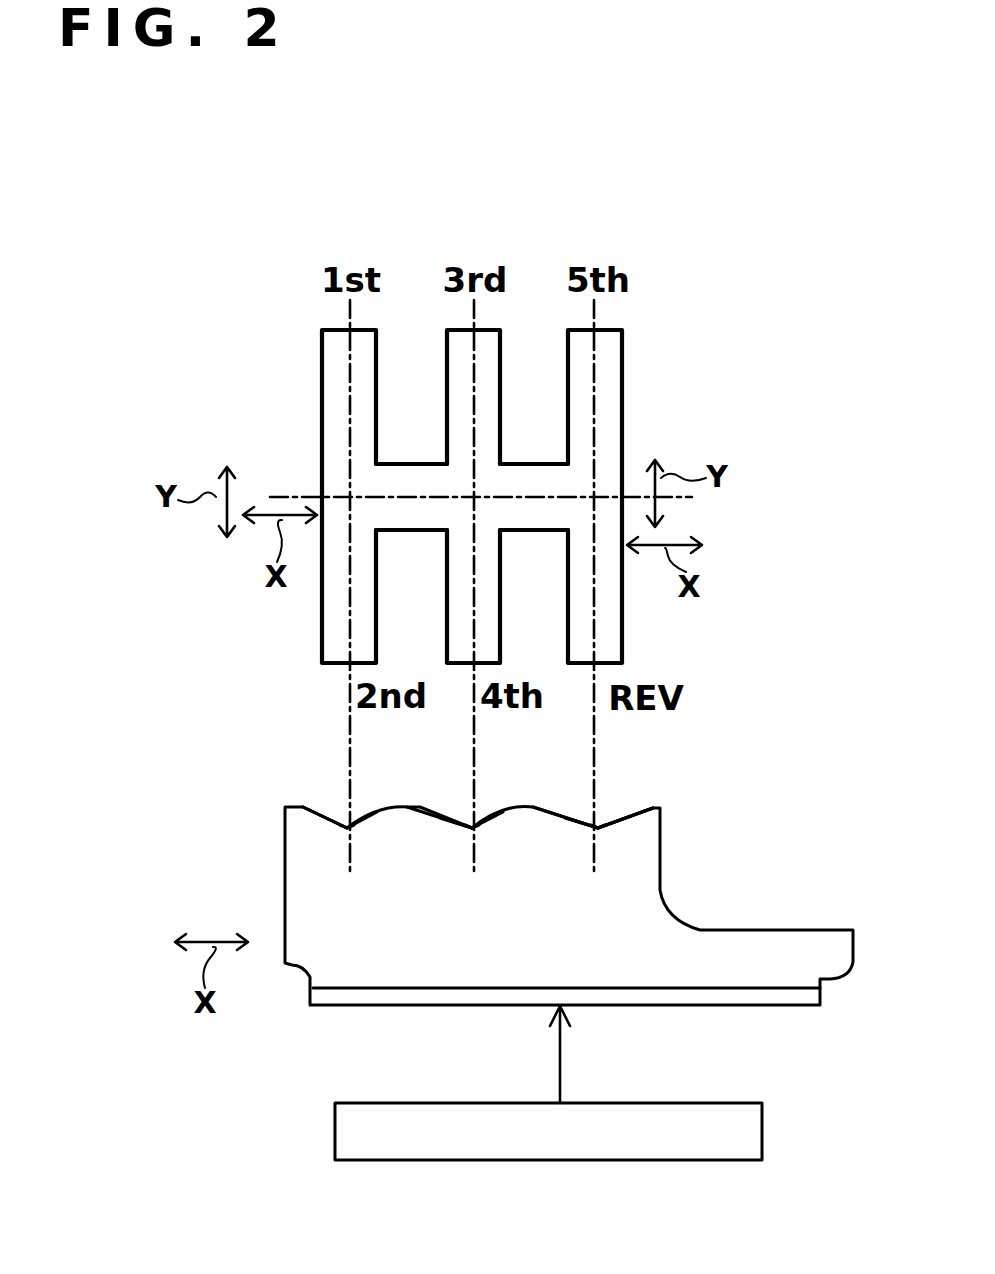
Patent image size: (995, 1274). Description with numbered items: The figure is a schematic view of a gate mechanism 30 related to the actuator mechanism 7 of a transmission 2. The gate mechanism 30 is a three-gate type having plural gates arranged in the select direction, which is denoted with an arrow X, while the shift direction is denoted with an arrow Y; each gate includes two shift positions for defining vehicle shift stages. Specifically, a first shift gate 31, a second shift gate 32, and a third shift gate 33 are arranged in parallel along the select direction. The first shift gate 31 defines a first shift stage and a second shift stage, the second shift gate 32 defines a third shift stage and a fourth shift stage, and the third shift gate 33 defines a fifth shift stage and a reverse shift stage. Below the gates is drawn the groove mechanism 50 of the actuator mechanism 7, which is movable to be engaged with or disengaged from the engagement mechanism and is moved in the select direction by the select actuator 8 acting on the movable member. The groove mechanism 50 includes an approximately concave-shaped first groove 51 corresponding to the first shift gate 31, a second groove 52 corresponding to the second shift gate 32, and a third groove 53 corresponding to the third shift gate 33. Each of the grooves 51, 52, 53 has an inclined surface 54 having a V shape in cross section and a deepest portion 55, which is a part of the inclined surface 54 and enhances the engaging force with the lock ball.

The transmission 2 is at (688, 378).
The actuator mechanism 7 is at (680, 336).
The select actuator 8 is at (762, 1103).
The gate mechanism 30 is at (300, 366).
The first shift gate 31 is at (322, 448).
The second shift gate 32 is at (446, 426).
The third shift gate 33 is at (623, 422).
The groove mechanism 50 is at (490, 965).
The first groove 51 is at (328, 815).
The second groove 52 is at (477, 826).
The third groove 53 is at (612, 815).
The inclined surface 54 is at (325, 818).
The deepest portion 55 is at (347, 828).